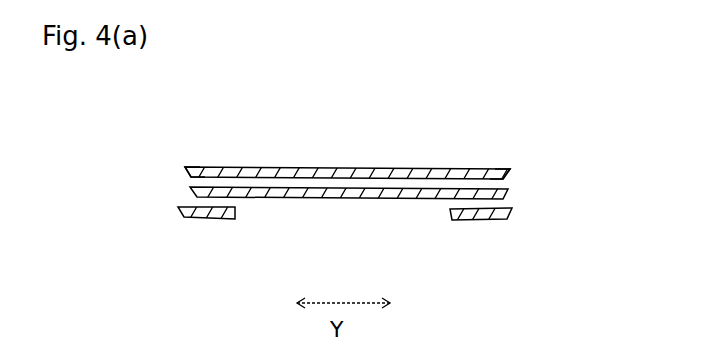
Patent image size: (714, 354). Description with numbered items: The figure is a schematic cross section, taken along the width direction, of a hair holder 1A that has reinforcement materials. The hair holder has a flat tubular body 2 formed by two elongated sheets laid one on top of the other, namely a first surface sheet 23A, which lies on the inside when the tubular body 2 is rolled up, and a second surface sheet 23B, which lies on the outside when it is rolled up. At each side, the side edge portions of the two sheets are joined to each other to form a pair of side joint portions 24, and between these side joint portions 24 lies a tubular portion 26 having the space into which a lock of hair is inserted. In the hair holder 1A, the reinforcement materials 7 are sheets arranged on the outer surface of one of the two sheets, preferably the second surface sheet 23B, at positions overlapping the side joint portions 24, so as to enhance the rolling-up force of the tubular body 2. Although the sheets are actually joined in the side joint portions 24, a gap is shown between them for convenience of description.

The hair holder 1A is at (478, 108).
The tubular body 2 is at (527, 163).
The first surface sheet 23A is at (335, 165).
The second surface sheet 23B is at (340, 201).
The side joint portion 24 is at (213, 142).
The tubular portion 26 is at (393, 179).
The reinforcement material 7 is at (193, 219).